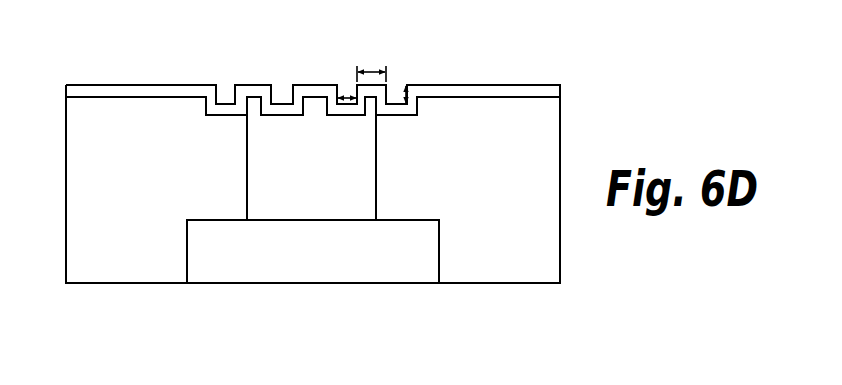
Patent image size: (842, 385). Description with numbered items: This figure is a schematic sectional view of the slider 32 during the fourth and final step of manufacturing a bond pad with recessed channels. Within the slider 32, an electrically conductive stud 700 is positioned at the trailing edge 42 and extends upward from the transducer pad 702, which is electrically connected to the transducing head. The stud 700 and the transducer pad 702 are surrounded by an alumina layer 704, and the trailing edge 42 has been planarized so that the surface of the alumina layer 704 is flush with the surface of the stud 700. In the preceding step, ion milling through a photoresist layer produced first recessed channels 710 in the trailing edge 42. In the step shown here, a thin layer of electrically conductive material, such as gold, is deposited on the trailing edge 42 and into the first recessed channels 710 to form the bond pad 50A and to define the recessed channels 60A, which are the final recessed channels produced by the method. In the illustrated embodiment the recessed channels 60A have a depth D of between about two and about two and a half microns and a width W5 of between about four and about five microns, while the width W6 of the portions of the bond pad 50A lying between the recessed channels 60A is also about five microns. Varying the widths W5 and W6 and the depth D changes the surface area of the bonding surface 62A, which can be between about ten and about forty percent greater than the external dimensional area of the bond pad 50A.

The trailing edge 42 is at (85, 96).
The bonding surface 62A is at (160, 85).
The bond pad 50A is at (117, 84).
The first recessed channels 710 is at (267, 88).
The recessed channels 60A is at (285, 108).
The width of recessed channels W5 is at (347, 97).
The width of bond pad portions between recessed channels W6 is at (359, 68).
The depth of recessed channels D is at (406, 86).
The electrically conductive stud 700 is at (333, 167).
The transducer pad 702 is at (335, 264).
The alumina layer 704 is at (158, 192).
The slider 32 is at (467, 66).